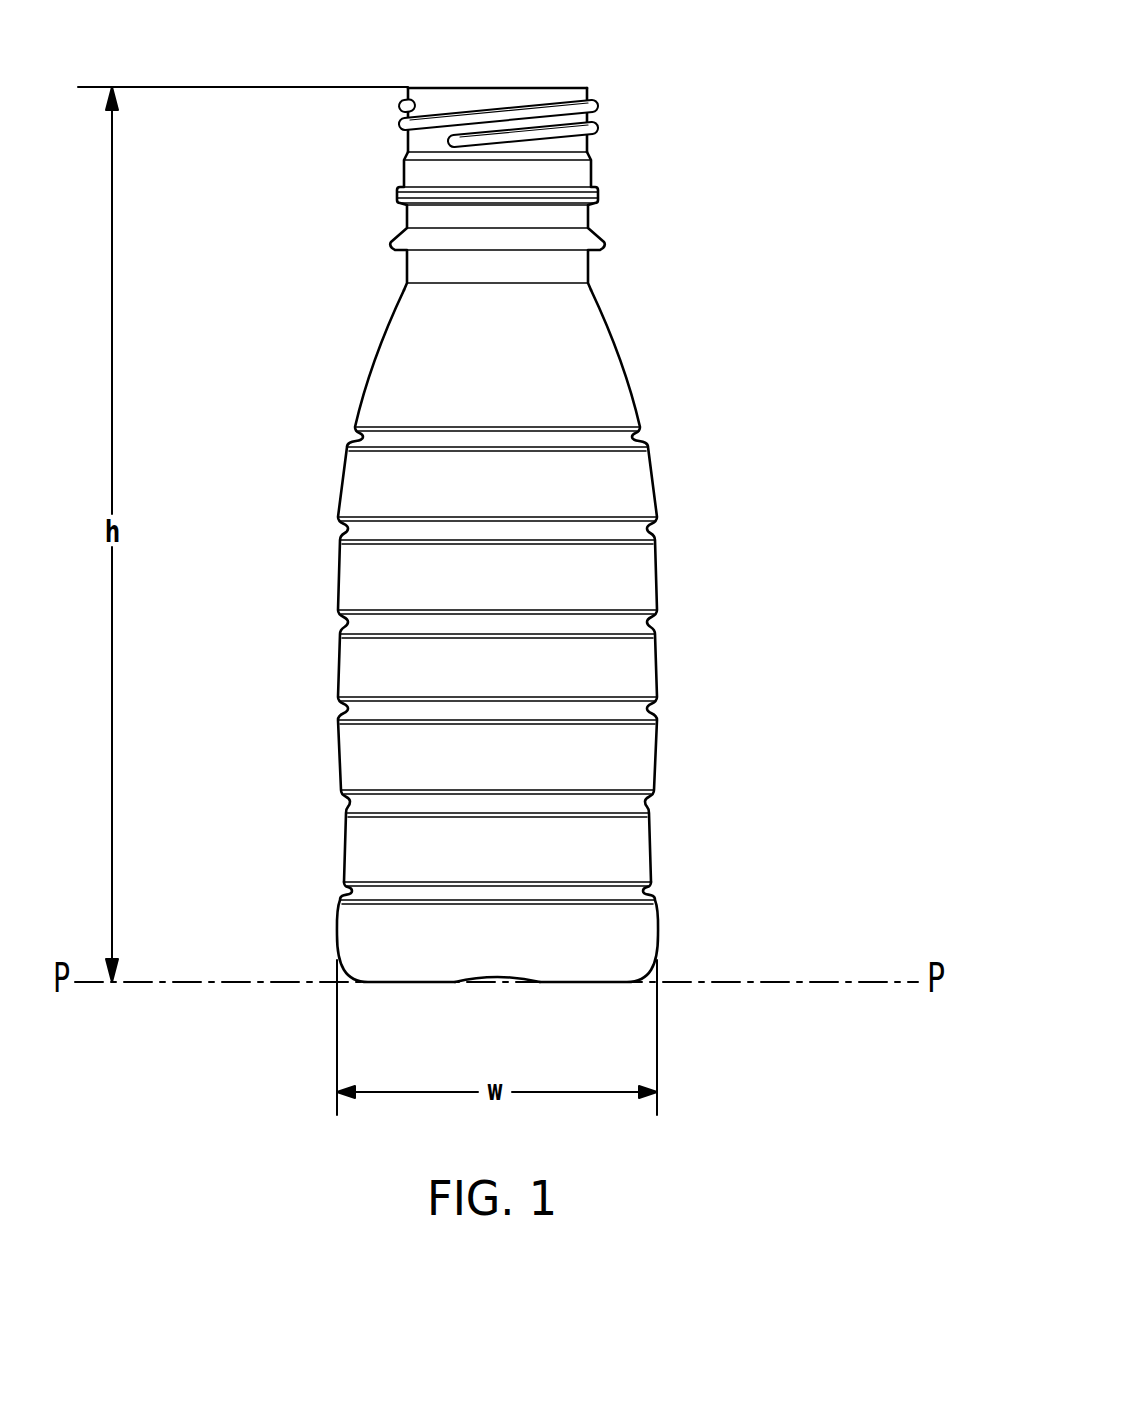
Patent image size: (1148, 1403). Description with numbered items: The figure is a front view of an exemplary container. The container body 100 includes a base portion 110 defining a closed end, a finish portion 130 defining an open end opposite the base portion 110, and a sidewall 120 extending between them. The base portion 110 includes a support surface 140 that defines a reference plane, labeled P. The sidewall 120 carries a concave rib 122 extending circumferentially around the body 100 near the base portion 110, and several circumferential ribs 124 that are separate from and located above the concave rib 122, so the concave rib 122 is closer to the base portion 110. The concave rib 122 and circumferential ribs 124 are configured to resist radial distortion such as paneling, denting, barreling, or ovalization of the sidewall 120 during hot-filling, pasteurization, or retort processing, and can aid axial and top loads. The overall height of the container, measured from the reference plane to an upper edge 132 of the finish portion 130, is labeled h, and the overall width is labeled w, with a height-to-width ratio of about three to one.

The container body 100 is at (571, 549).
The base portion 110 is at (664, 953).
The sidewall 120 is at (342, 477).
The concave rib 122 is at (641, 892).
The circumferential ribs 124 is at (648, 444).
The finish portion 130 is at (590, 174).
The upper edge 132 is at (584, 88).
The support surface 140 is at (586, 983).